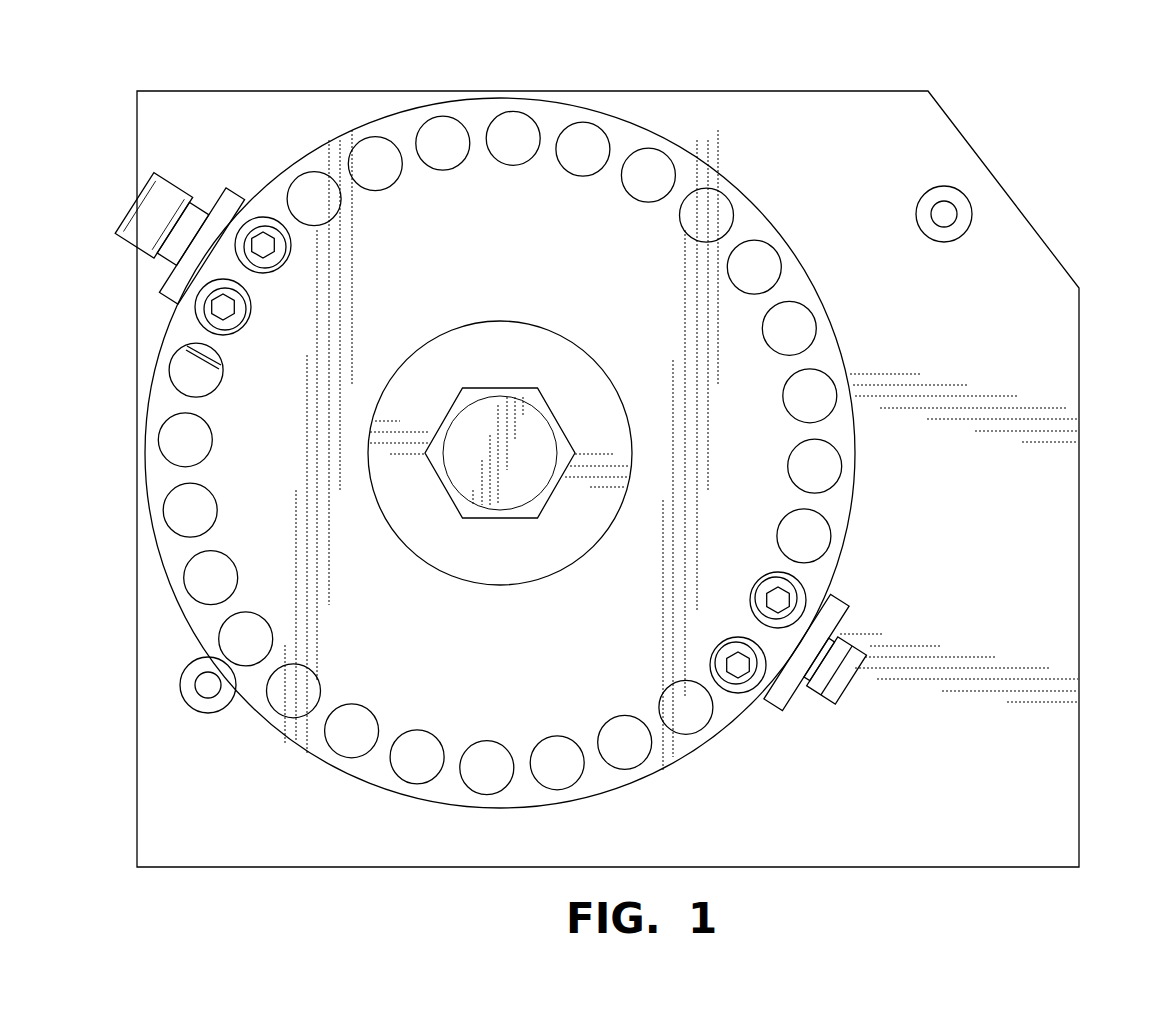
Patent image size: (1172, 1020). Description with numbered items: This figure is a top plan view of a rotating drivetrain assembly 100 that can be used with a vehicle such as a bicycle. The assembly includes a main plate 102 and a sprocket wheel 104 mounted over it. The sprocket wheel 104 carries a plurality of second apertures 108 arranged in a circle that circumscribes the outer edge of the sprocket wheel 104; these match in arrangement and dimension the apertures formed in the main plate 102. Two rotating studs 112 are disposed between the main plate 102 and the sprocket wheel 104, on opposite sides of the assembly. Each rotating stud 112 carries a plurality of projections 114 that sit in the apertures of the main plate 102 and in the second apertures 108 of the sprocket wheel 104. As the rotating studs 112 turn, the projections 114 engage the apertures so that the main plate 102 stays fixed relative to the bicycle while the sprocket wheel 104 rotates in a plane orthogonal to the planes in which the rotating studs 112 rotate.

The rotating drivetrain assembly 100 is at (618, 442).
The main plate 102 is at (1012, 552).
The sprocket wheel 104 is at (475, 210).
The second apertures 108 is at (512, 133).
The rotating studs 112 is at (227, 193).
The projections 114 is at (217, 312).